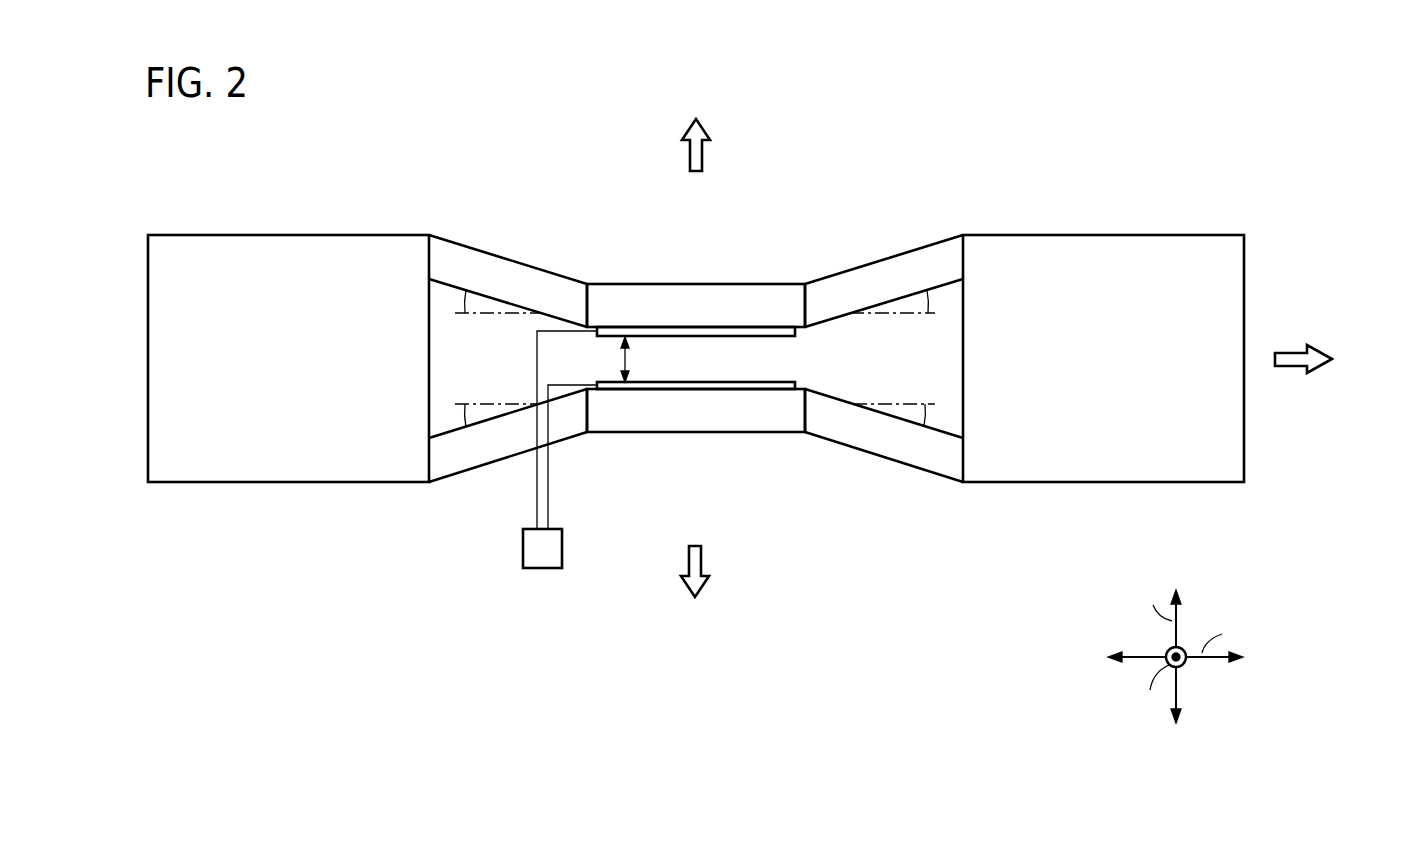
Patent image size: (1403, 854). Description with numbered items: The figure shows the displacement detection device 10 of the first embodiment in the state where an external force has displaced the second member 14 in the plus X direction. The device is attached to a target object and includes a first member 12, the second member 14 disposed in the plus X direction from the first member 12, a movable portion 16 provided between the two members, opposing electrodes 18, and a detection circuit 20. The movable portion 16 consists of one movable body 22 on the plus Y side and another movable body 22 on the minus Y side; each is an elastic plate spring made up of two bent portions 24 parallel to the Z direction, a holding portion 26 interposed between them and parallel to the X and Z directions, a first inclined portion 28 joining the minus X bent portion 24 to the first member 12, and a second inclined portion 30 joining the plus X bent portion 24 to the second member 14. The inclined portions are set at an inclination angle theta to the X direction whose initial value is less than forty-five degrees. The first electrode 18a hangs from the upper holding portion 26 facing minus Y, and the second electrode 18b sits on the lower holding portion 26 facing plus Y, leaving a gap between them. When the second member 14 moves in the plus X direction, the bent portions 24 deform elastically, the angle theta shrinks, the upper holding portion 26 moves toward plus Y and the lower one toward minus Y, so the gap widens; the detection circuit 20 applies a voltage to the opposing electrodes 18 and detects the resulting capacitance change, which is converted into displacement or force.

The displacement detection device 10 is at (329, 141).
The first member 12 is at (249, 250).
The second member 14 is at (1085, 250).
The movable portion 16 is at (751, 195).
The opposing electrodes 18 is at (763, 361).
The first electrode 18a is at (797, 333).
The second electrode 18b is at (797, 384).
The detection circuit 20 is at (545, 570).
The movable body 22 is at (826, 233).
The bent portion 24 is at (588, 284).
The holding portion 26 is at (690, 294).
The first inclined portion 28 is at (541, 283).
The second inclined portion 30 is at (848, 280).